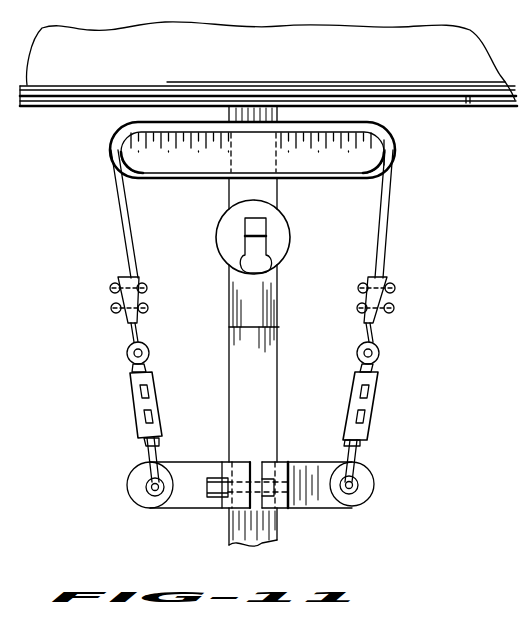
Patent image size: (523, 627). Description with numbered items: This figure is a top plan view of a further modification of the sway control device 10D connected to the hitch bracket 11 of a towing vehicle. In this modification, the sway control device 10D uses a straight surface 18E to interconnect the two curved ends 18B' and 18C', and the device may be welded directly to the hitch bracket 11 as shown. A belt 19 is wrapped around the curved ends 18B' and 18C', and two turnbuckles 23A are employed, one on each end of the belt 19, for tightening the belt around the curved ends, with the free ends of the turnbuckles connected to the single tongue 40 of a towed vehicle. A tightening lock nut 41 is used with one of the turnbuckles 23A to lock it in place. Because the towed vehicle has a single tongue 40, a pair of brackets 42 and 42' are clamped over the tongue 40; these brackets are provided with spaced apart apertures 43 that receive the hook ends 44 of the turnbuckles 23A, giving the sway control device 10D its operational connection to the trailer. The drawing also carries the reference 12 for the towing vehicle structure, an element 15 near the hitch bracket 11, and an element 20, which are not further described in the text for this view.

The table top 12 is at (470, 108).
The curved end 18C' is at (227, 150).
The curved end 18B' is at (416, 150).
The straight surface 18E is at (258, 135).
The belt 19 is at (113, 203).
The hitch bracket 11 is at (227, 195).
The ball joint 15 is at (224, 240).
The suspension arm 20 is at (318, 160).
The sway control device 10D is at (407, 232).
The turnbuckle 23A is at (130, 408).
The tightening lock nut 41 is at (147, 444).
The bracket 42' is at (220, 468).
The bracket 42 is at (307, 468).
The hook end 44 is at (135, 492).
The aperture 43 is at (156, 497).
The tongue 40 is at (272, 527).